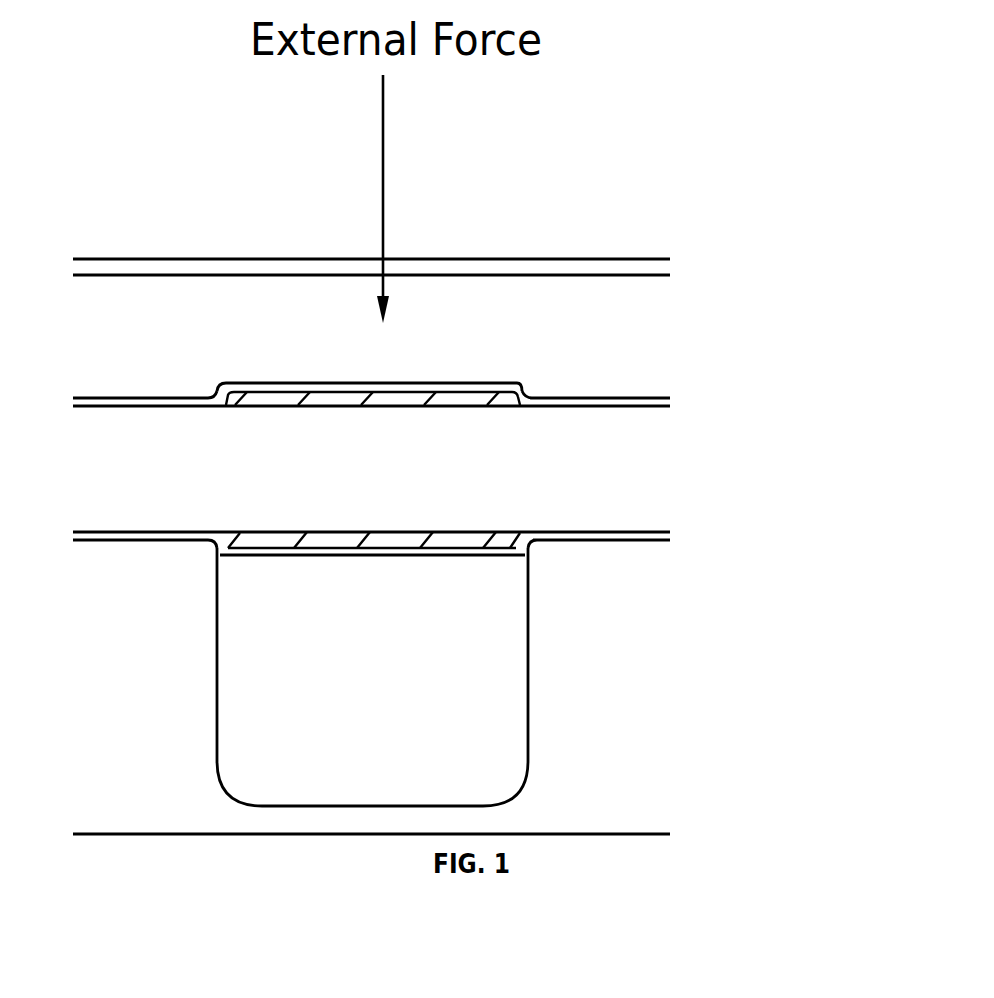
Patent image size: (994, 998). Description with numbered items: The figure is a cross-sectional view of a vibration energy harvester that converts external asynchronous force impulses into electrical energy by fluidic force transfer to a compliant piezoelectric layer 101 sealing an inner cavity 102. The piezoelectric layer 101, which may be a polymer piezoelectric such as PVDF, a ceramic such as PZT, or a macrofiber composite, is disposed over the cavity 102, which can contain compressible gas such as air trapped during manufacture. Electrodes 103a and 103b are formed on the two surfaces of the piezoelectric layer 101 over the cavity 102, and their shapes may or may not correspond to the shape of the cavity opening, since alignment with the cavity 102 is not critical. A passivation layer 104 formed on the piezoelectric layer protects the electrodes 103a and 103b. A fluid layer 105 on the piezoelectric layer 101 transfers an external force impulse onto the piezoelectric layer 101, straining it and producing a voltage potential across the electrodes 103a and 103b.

The piezoelectric layer 101 is at (602, 457).
The cavity 102 is at (443, 753).
The electrode 103a is at (522, 540).
The electrode 103b is at (530, 388).
The passivation layer 104 is at (607, 395).
The fluid layer 105 is at (525, 332).